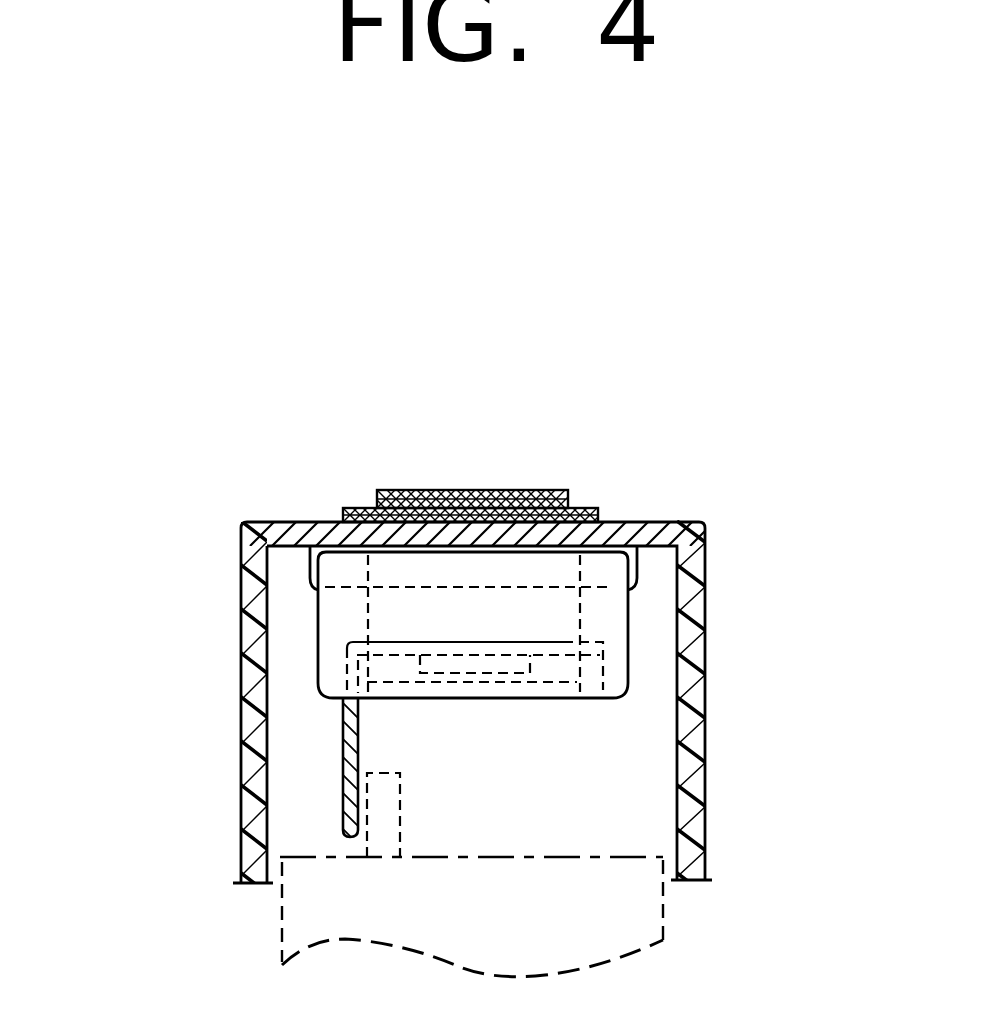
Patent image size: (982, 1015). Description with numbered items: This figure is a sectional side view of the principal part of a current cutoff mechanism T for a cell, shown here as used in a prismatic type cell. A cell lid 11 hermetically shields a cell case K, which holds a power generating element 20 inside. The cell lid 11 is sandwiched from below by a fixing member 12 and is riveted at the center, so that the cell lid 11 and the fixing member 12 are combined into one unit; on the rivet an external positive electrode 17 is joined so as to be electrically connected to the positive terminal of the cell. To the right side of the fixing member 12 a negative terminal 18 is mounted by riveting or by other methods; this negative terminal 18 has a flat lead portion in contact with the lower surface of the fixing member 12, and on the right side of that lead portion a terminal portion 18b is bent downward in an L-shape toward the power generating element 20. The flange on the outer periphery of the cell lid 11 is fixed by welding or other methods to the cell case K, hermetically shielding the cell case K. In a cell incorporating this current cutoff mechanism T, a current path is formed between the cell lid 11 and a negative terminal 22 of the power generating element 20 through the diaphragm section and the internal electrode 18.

The current cutoff mechanism T is at (482, 589).
The cell lid 11 is at (670, 519).
The cell case K is at (241, 718).
The external positive electrode 17 is at (495, 490).
The fixing member 12 is at (632, 624).
The negative terminal 18 is at (343, 797).
The terminal portion 18b is at (360, 793).
The negative terminal of the power generating element 22 is at (400, 790).
The power generating element 20 is at (663, 935).